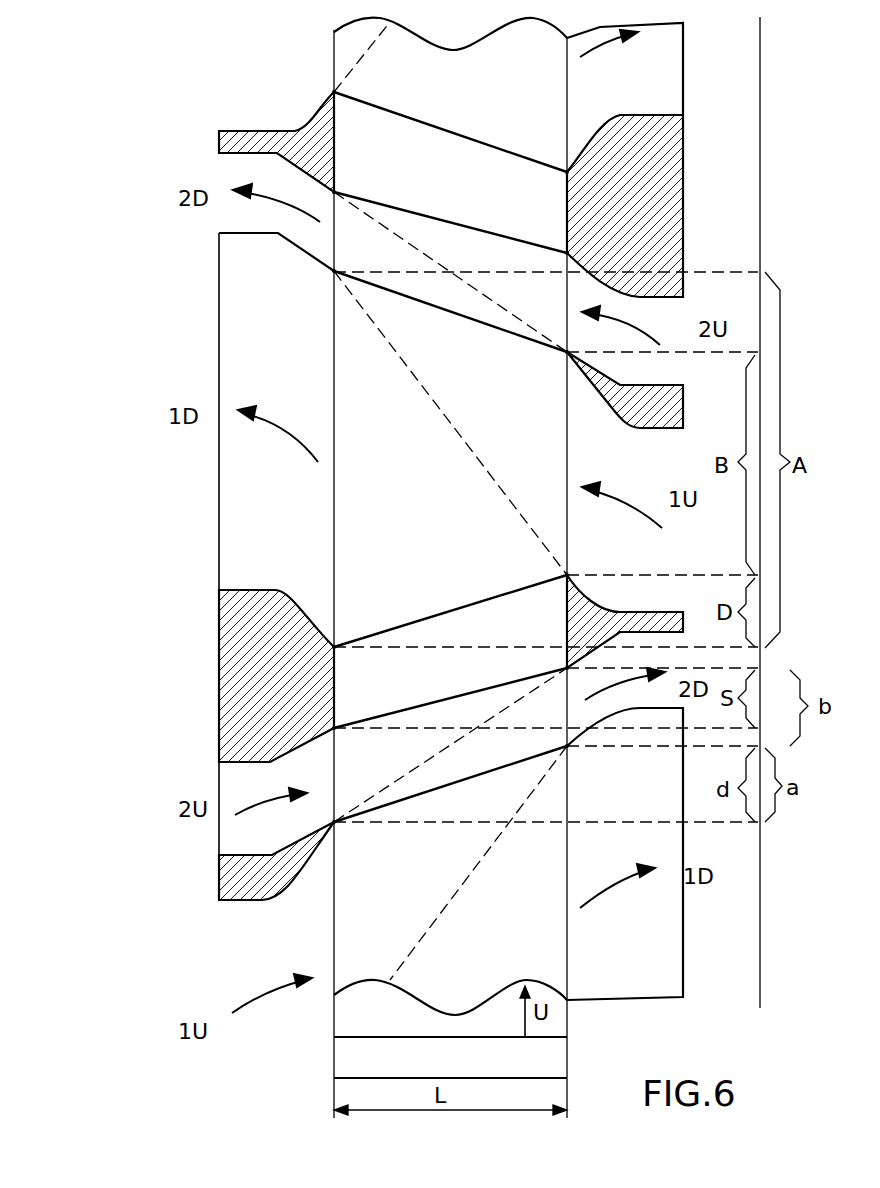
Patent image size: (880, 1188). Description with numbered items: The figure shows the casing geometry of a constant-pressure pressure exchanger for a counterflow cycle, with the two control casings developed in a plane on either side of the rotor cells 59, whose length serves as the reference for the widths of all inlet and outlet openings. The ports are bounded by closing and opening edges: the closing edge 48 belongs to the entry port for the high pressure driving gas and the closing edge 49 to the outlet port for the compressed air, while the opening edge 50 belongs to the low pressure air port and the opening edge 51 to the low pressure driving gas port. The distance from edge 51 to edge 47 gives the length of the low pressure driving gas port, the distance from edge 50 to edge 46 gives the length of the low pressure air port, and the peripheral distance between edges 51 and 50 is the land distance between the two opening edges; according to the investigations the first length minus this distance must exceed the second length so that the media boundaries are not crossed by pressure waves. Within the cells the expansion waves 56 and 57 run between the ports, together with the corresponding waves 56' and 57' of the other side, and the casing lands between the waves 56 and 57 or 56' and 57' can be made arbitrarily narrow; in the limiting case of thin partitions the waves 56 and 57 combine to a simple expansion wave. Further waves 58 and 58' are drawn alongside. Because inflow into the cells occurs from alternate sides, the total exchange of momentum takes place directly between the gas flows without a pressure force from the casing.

The closing edge 46 is at (566, 353).
The closing edge 47 is at (334, 272).
The closing edge of high pressure driving gas port 2U 48 is at (565, 252).
The closing edge of high pressure air port 2D 49 is at (336, 191).
The opening edge of low pressure air port 1U 50 is at (336, 92).
The opening edge of low pressure driving gas port 1D 51 is at (565, 170).
The expansion wave 56 is at (450, 696).
The expansion wave 56' is at (450, 216).
The expansion wave 57 is at (450, 606).
The expansion wave 57' is at (450, 132).
The hub boundary line 58 is at (450, 780).
The hub boundary line (second stage) 58' is at (450, 321).
The rotor cells 59 is at (464, 1067).